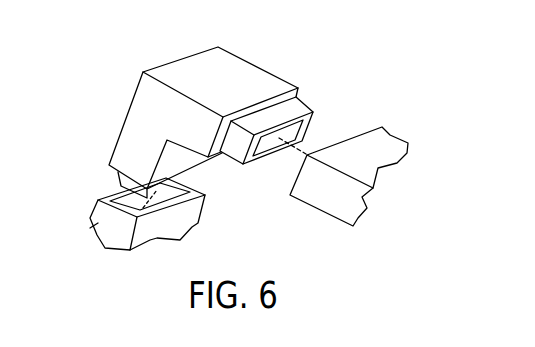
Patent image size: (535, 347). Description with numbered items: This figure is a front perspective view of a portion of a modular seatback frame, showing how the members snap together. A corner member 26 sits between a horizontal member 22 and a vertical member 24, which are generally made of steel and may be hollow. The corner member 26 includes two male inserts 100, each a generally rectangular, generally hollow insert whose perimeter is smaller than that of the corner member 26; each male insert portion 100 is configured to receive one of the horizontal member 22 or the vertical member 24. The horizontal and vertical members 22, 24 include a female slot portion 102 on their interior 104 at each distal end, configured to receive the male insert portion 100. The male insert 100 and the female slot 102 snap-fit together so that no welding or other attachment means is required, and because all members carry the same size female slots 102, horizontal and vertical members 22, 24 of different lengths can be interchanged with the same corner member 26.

The horizontal member 22 is at (385, 140).
The vertical member 24 is at (90, 228).
The corner member 26 is at (229, 64).
The male insert portion 100 is at (299, 106).
The female slot portion 102 is at (113, 190).
The interior 104 is at (177, 180).